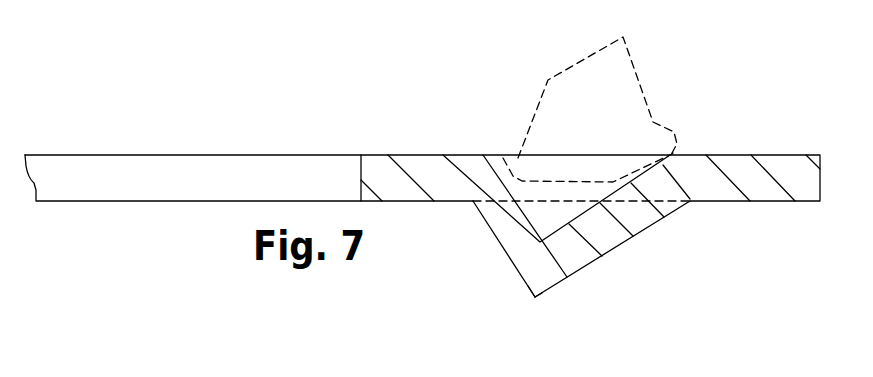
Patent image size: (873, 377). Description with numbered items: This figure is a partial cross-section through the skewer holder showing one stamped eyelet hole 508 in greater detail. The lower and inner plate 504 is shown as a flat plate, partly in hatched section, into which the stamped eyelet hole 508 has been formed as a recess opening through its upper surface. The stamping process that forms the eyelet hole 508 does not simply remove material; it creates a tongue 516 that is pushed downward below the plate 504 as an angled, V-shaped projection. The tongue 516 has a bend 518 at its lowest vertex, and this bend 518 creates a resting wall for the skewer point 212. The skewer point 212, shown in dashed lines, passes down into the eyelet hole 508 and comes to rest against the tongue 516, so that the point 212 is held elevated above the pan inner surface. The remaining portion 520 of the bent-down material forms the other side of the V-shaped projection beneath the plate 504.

The lower and inner plate 504 is at (153, 155).
The stamped eyelet hole 508 is at (645, 163).
The point 212 is at (502, 155).
The tongue 516 is at (583, 270).
The bend 518 is at (535, 297).
The left arm of V-shaped portion 520 is at (497, 237).